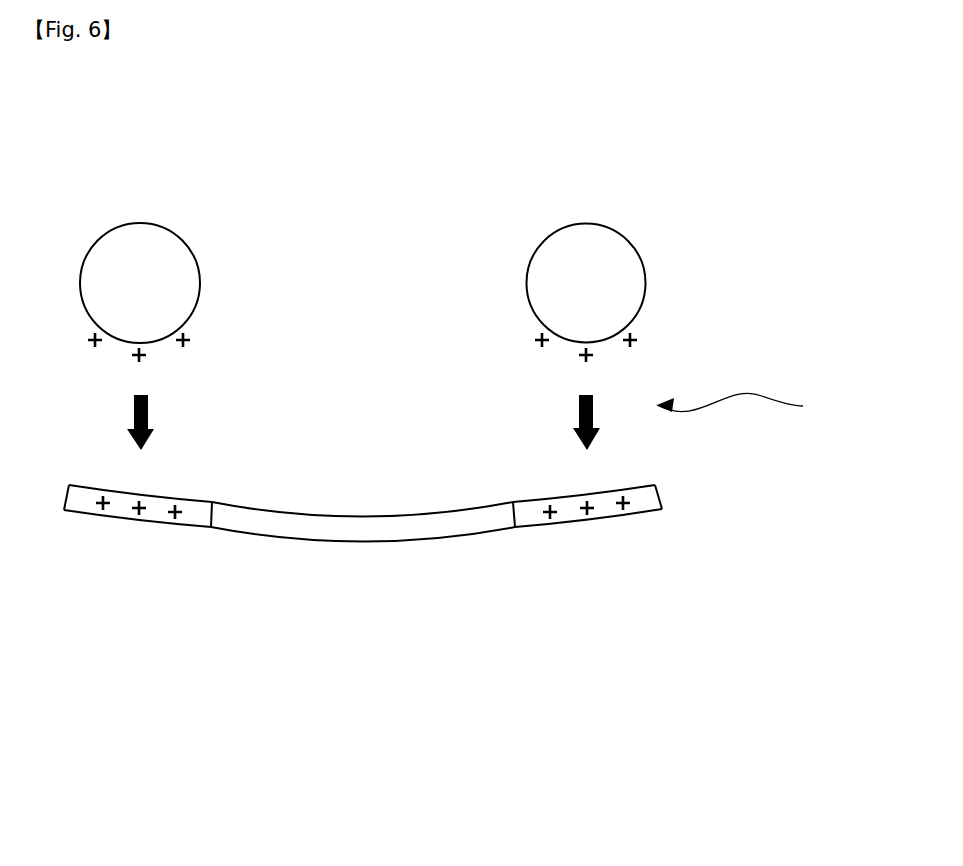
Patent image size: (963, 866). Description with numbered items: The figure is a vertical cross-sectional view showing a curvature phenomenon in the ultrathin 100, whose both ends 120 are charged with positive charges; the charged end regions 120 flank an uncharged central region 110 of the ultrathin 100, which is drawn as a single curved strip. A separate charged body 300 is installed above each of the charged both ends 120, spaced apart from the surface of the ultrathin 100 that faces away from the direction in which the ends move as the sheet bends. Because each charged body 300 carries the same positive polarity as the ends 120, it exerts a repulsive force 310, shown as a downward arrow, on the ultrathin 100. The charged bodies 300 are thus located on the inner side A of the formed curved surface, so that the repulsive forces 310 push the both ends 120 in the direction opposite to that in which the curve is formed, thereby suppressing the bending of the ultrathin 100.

The ultrathin 100 is at (363, 597).
The central region of substrate 110 is at (363, 525).
The both ends of the ultrathin 120 is at (568, 630).
The charged body 300 is at (139, 223).
The repulsive force 310 is at (148, 412).
The inner side of the formed curved surface A is at (743, 409).